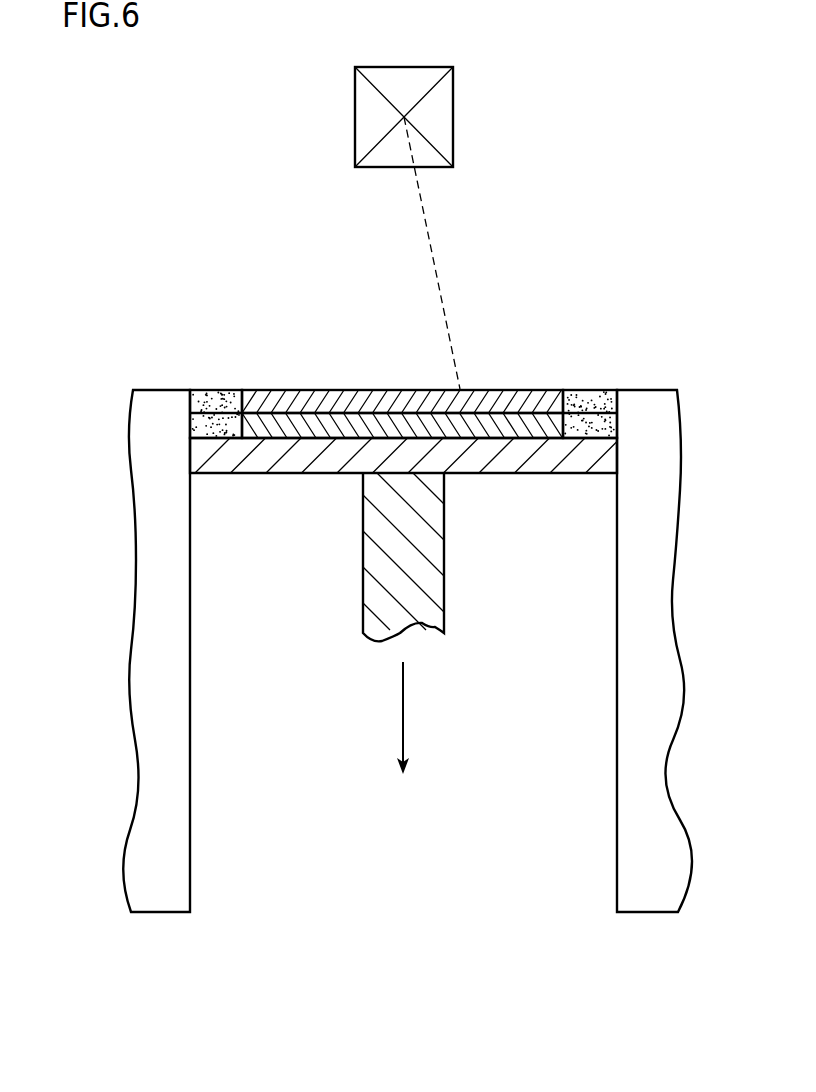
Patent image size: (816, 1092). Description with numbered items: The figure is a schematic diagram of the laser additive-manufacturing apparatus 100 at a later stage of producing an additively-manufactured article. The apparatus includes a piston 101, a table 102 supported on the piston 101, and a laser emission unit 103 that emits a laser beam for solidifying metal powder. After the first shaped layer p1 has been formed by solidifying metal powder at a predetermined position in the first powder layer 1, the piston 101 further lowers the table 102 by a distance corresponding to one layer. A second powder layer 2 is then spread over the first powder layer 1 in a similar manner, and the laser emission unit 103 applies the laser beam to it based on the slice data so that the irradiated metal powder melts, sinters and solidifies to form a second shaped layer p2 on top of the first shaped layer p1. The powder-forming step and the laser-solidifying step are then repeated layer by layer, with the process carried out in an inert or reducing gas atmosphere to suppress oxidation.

The laser additive-manufacturing apparatus 100 is at (131, 126).
The piston 101 is at (383, 562).
The table 102 is at (507, 460).
The laser emission unit 103 is at (440, 116).
The first powder layer 1 is at (216, 420).
The second powder layer 2 is at (600, 400).
The first shaped layer p1 is at (370, 427).
The second shaped layer p2 is at (418, 403).